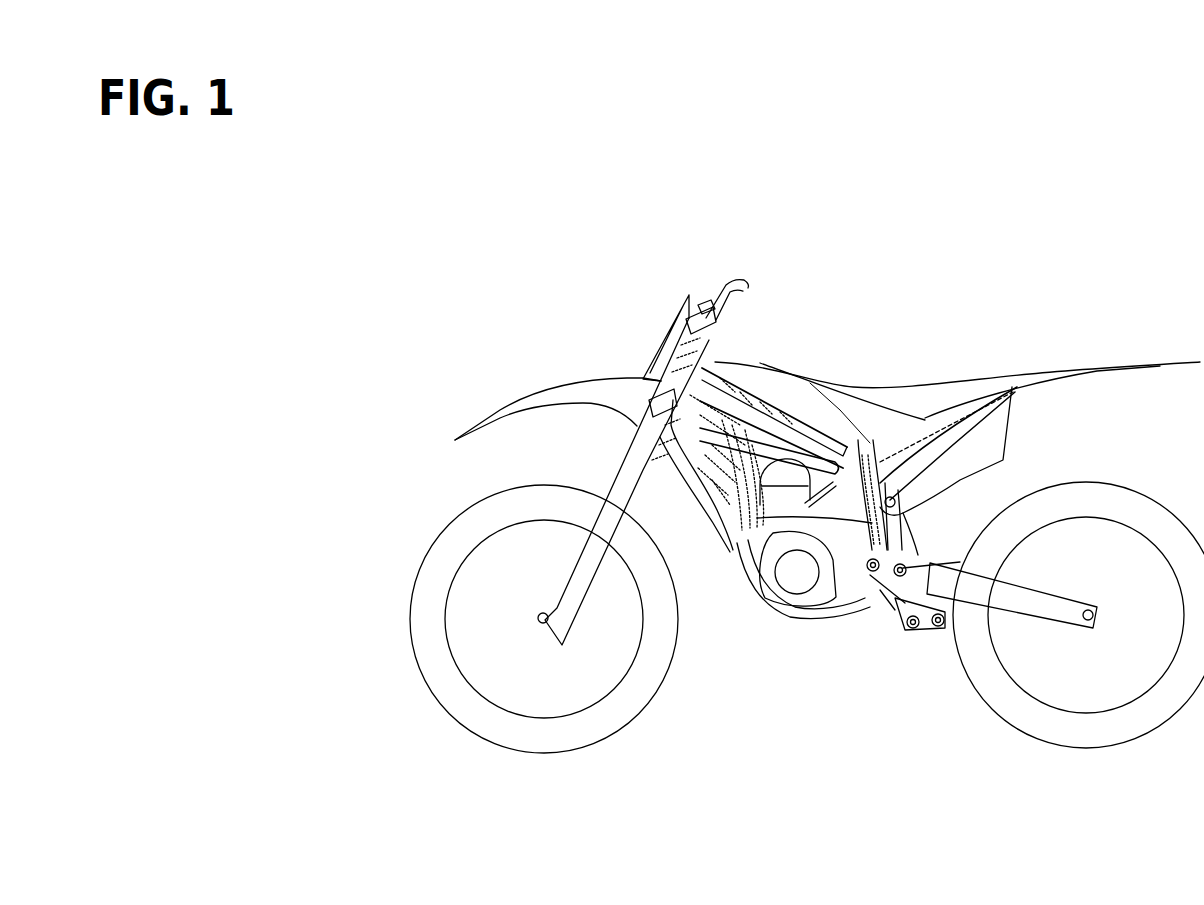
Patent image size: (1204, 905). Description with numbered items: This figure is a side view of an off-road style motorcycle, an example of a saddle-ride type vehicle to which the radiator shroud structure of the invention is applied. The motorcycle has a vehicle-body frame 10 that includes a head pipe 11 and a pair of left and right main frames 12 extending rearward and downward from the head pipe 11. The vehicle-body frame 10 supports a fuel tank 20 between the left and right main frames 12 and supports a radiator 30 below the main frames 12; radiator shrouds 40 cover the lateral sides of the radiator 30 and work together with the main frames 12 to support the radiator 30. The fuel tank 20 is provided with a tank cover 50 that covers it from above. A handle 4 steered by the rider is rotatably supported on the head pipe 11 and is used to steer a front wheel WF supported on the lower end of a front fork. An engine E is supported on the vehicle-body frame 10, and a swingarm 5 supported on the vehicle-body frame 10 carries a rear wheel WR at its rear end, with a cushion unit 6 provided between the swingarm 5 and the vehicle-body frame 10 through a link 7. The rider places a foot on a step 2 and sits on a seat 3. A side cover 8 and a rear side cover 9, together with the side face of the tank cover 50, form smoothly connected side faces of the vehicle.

The step 2 is at (872, 612).
The seat 3 is at (908, 392).
The handle 4 is at (718, 278).
The swingarm 5 is at (1045, 597).
The cushion unit 6 is at (917, 553).
The link 7 is at (920, 638).
The side cover 8 is at (923, 414).
The rear side cover 9 is at (975, 443).
The vehicle-body frame 10 is at (863, 447).
The head pipe 11 is at (673, 338).
The main frame 12 is at (804, 412).
The fuel tank 20 is at (778, 367).
The radiator 30 is at (757, 518).
The radiator shroud 40 is at (697, 447).
The tank cover 50 is at (720, 360).
The engine E is at (800, 580).
The front wheel WF is at (472, 512).
The rear wheel WR is at (1117, 487).